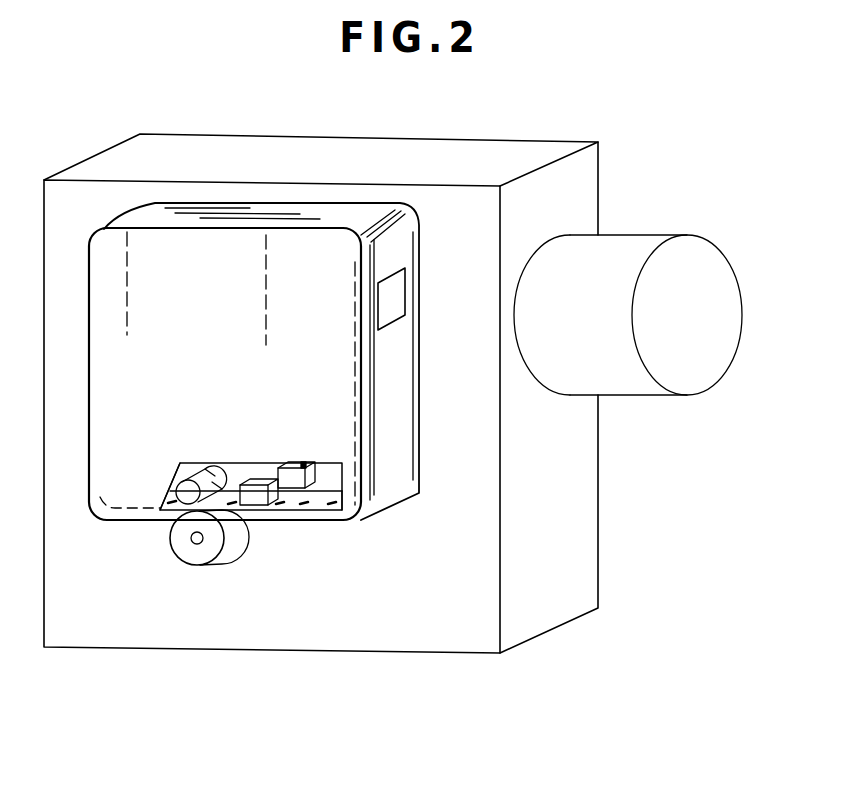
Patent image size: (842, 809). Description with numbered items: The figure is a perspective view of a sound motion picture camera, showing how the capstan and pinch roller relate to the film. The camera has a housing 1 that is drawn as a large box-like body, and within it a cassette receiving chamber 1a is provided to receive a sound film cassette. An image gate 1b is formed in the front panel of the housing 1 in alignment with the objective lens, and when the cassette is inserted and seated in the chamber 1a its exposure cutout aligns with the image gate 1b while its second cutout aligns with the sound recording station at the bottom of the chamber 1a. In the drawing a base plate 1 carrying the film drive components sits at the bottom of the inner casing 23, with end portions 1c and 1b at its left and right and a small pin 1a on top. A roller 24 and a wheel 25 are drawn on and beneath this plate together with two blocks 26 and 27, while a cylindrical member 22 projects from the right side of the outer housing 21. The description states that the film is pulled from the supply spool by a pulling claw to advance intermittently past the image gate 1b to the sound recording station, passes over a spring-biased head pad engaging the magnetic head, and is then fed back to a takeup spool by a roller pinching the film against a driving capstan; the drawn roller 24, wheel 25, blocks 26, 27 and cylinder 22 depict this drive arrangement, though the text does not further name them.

The housing 1 is at (232, 490).
The cassette receiving chamber 1a is at (327, 490).
The image gate 1b is at (330, 508).
The left end portion of base plate 1c is at (181, 503).
The housing 21 is at (443, 645).
The cylindrical member 22 is at (651, 246).
The inner casing 23 is at (297, 215).
The roller 24 is at (184, 481).
The wheel 25 is at (197, 557).
The block 26 is at (292, 480).
The block 27 is at (260, 510).